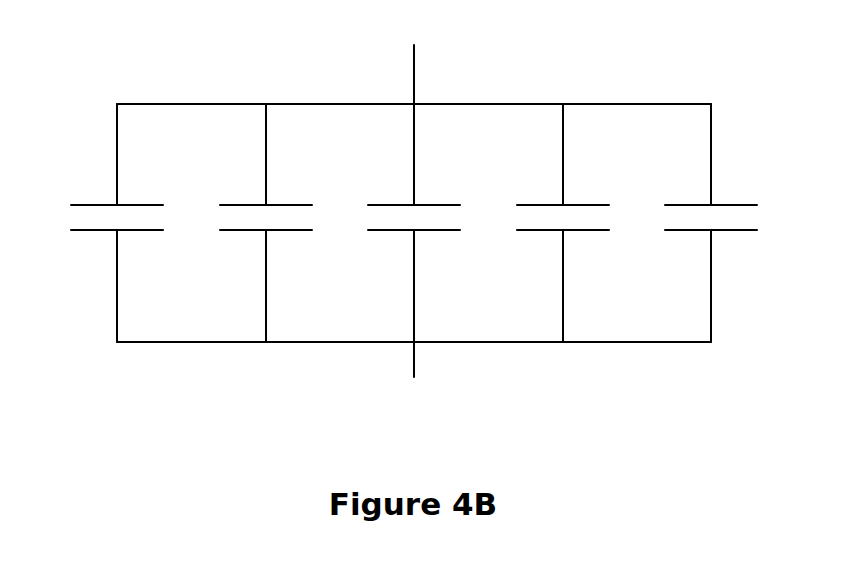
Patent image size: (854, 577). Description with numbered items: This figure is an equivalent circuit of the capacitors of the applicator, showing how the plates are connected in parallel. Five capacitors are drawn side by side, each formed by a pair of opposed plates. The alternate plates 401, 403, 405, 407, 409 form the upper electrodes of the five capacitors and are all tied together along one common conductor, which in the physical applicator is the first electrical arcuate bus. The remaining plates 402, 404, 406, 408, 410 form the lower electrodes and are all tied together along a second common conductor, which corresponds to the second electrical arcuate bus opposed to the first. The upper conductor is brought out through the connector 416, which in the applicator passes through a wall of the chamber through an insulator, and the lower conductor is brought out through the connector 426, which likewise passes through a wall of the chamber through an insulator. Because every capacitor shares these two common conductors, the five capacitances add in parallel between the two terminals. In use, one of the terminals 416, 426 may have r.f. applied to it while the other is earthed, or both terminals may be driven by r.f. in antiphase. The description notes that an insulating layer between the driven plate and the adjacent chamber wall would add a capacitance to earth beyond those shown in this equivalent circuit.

The plate 401 is at (98, 176).
The plate 402 is at (106, 260).
The plate 403 is at (247, 176).
The plate 404 is at (255, 260).
The plate 405 is at (395, 176).
The plate 406 is at (403, 260).
The plate 407 is at (544, 176).
The plate 408 is at (552, 260).
The plate 409 is at (692, 176).
The plate 410 is at (700, 260).
The connector 416 is at (377, 121).
The connector 426 is at (387, 323).